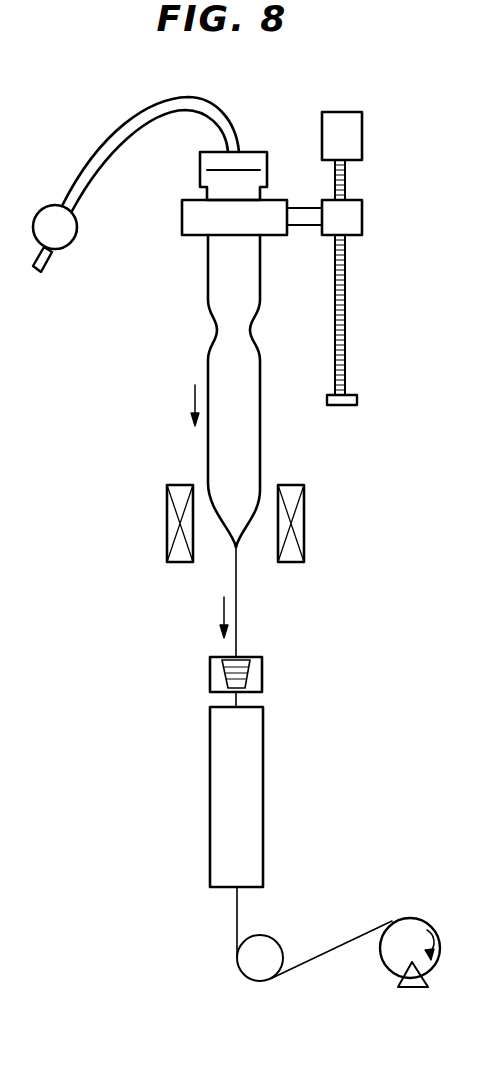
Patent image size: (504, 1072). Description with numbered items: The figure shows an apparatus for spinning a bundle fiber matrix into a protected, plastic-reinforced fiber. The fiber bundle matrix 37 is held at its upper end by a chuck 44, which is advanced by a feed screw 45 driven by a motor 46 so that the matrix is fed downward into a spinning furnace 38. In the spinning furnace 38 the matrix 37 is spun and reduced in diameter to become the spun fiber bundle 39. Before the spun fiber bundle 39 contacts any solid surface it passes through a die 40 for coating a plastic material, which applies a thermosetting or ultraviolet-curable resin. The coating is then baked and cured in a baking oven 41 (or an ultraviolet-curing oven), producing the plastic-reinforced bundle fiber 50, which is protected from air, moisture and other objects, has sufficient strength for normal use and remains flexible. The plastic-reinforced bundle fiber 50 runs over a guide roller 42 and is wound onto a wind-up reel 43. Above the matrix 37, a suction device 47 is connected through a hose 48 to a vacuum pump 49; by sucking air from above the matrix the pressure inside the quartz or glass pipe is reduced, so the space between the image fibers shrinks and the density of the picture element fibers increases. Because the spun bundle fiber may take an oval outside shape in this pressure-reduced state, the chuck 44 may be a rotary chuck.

The fiber bundle matrix 37 is at (250, 432).
The spinning furnace 38 is at (298, 523).
The spun fiber bundle 39 is at (236, 608).
The die for coating a plastic material 40 is at (262, 672).
The baking oven 41 is at (252, 770).
The guide roller 42 is at (270, 948).
The wind-up reel 43 is at (410, 923).
The chuck 44 is at (182, 221).
The feed screw 45 is at (345, 290).
The motor 46 is at (362, 131).
The suction device 47 is at (257, 152).
The hose 48 is at (116, 132).
The vacuum pump 49 is at (78, 226).
The plastic-reinforced bundle fiber 50 is at (355, 937).